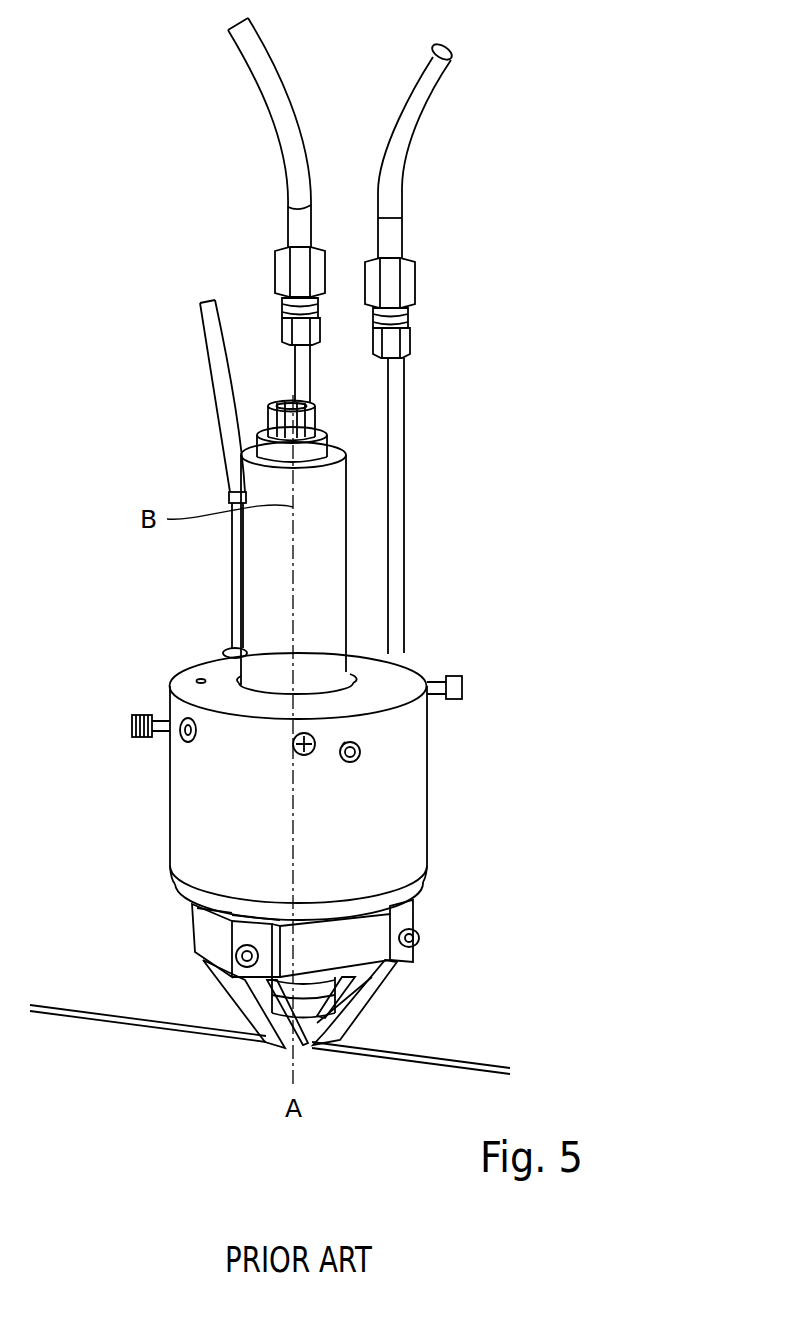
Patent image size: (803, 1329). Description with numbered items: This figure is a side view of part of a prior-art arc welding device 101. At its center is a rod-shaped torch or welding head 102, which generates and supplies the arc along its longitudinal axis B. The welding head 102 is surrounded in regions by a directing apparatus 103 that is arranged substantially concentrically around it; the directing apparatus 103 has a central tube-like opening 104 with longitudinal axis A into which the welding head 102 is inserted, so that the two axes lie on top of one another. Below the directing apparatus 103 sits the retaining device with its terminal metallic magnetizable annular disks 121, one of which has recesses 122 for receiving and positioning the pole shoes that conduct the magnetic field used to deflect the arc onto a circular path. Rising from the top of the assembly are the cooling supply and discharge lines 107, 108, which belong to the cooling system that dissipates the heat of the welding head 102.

The arc welding device 101 is at (326, 551).
The welding head 102 is at (330, 565).
The directing apparatus 103 is at (397, 810).
The central tube-like opening 104 is at (350, 641).
The cooling supply line 107 is at (398, 393).
The cooling discharge line 108 is at (302, 373).
The annular disk 121 is at (358, 945).
The recess 122 is at (232, 937).